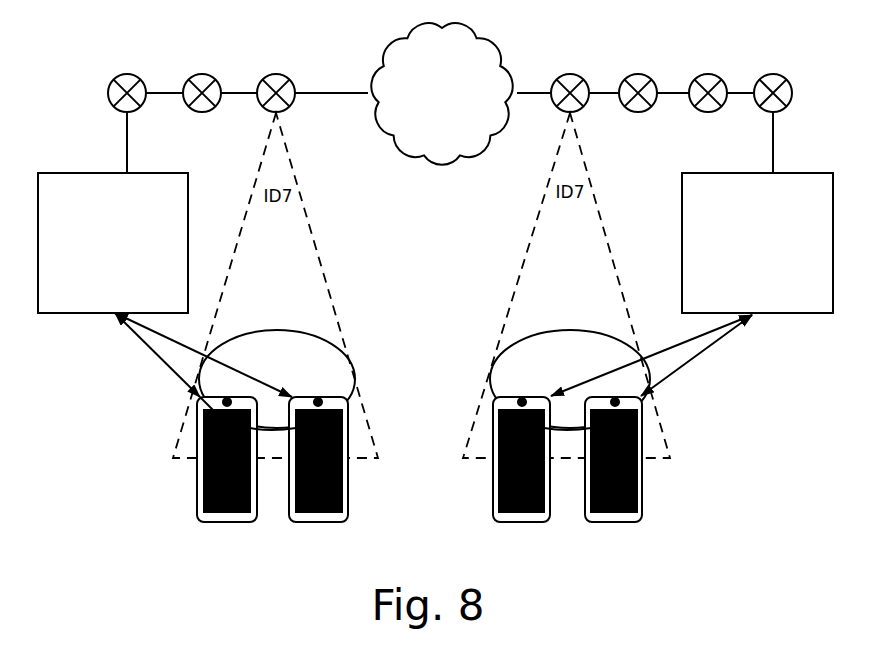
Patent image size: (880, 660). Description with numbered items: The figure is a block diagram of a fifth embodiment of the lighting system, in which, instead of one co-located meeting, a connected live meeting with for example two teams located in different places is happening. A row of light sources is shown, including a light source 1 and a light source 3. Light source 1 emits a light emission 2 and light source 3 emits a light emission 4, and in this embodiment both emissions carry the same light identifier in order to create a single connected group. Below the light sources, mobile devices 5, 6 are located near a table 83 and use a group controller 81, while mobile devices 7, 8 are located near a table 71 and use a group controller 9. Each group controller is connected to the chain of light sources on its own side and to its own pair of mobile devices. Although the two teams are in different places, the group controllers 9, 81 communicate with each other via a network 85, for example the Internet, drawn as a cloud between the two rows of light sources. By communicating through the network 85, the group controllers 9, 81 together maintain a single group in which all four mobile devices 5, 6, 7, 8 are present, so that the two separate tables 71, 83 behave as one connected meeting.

The light source 1 is at (268, 73).
The light emission 2 is at (293, 170).
The light source 3 is at (562, 73).
The light emission 4 is at (583, 168).
The mobile device 5 is at (222, 522).
The mobile device 6 is at (316, 522).
The mobile device 7 is at (518, 522).
The mobile device 8 is at (613, 522).
The group controller 9 is at (798, 313).
The table 71 is at (492, 400).
The group controller 81 is at (62, 313).
The table 83 is at (335, 345).
The network 85 is at (441, 94).